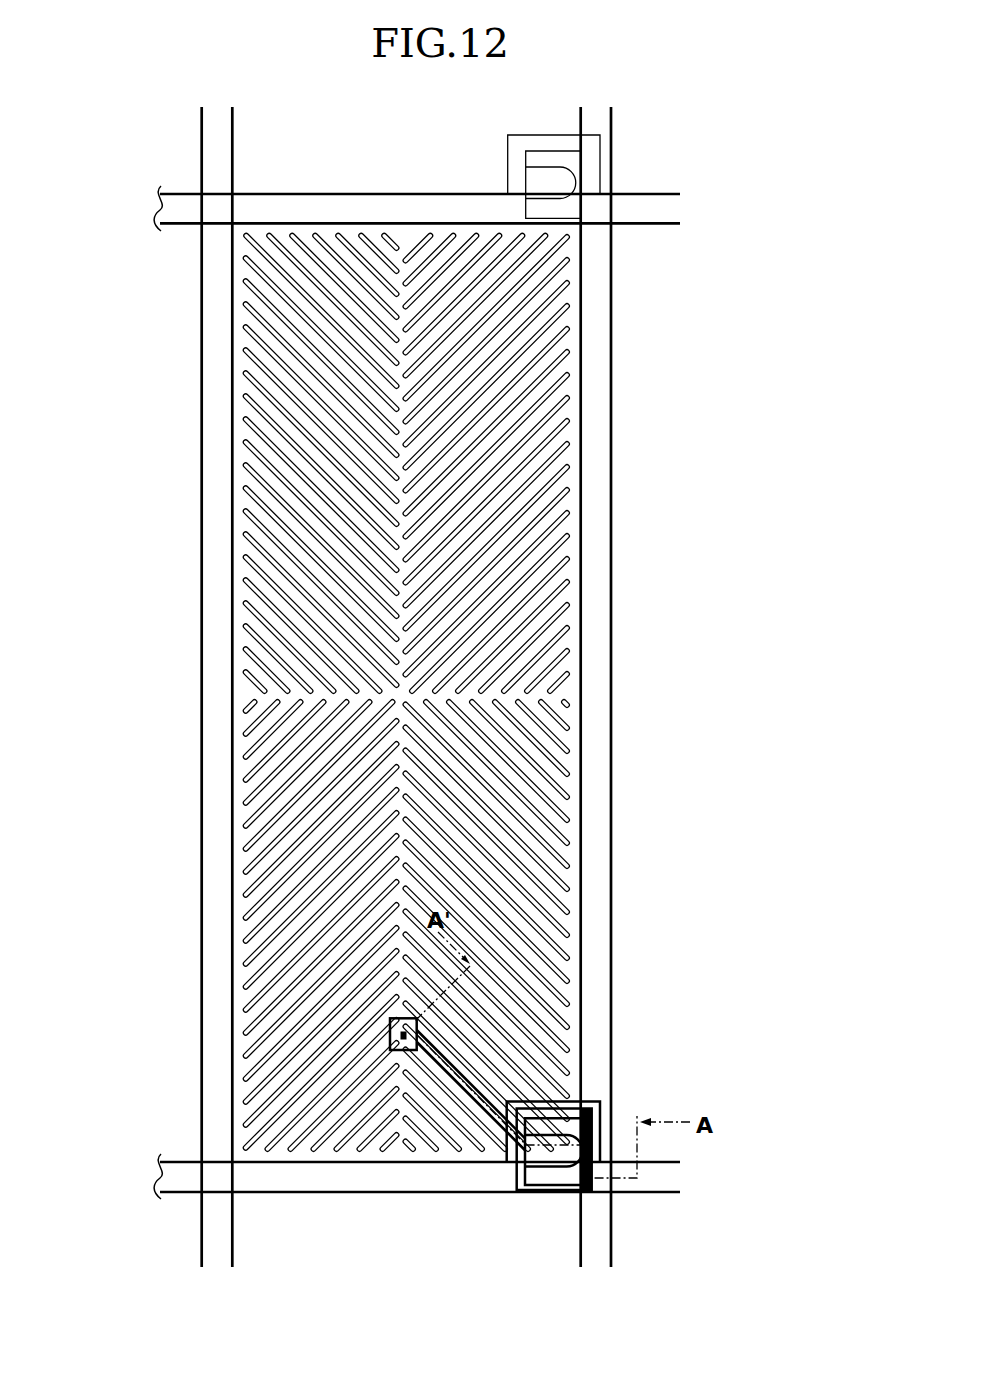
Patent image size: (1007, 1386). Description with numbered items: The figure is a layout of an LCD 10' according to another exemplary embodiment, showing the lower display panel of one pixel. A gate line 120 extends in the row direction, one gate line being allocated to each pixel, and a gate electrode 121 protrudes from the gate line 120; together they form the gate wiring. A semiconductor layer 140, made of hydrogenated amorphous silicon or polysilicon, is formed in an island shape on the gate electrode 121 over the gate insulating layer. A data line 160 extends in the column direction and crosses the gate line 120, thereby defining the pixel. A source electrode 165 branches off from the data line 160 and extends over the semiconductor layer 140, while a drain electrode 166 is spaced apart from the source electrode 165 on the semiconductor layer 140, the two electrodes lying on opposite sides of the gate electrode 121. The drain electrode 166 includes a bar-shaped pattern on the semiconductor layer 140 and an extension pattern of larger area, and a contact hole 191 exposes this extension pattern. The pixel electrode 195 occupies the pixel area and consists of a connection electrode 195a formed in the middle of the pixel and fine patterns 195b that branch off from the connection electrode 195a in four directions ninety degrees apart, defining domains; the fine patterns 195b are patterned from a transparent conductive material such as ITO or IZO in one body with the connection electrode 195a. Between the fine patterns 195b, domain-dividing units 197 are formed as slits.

The LCD 10' is at (415, 1322).
The gate line 120 is at (378, 1194).
The gate electrode 121 is at (589, 1098).
The semiconductor layer 140 is at (593, 1186).
The data line 160 is at (613, 836).
The source electrode 165 is at (517, 1190).
The drain electrode 166 is at (527, 1160).
The contact hole 191 is at (391, 1035).
The pixel electrode 195 is at (501, 692).
The connection electrode 195a is at (404, 686).
The fine patterns 195b is at (537, 611).
The domain-dividing units 197 is at (532, 580).